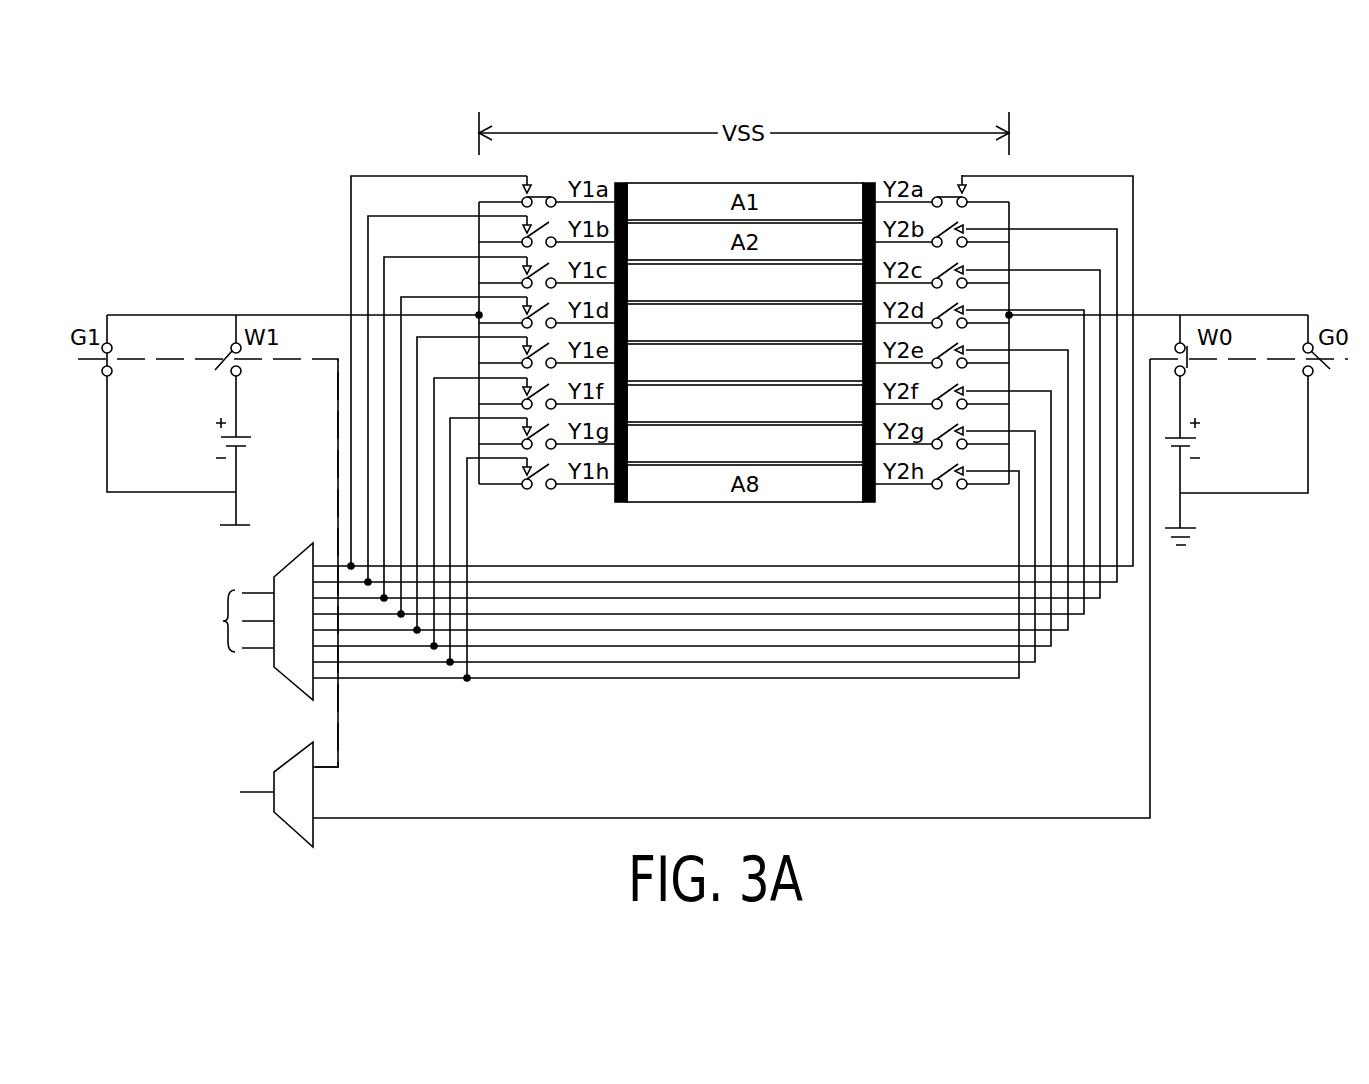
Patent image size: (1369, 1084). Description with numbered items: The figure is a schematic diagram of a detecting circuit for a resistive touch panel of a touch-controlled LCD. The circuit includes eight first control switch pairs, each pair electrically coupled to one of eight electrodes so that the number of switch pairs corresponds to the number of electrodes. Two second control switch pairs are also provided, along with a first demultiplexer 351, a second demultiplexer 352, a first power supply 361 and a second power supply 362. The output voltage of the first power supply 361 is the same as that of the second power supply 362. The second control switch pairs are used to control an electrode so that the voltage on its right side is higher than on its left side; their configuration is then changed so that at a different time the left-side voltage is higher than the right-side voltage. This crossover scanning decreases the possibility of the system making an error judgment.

The first demultiplexer 351 is at (293, 558).
The second demultiplexer 352 is at (293, 755).
The first power supply 361 is at (218, 443).
The second power supply 362 is at (1197, 441).